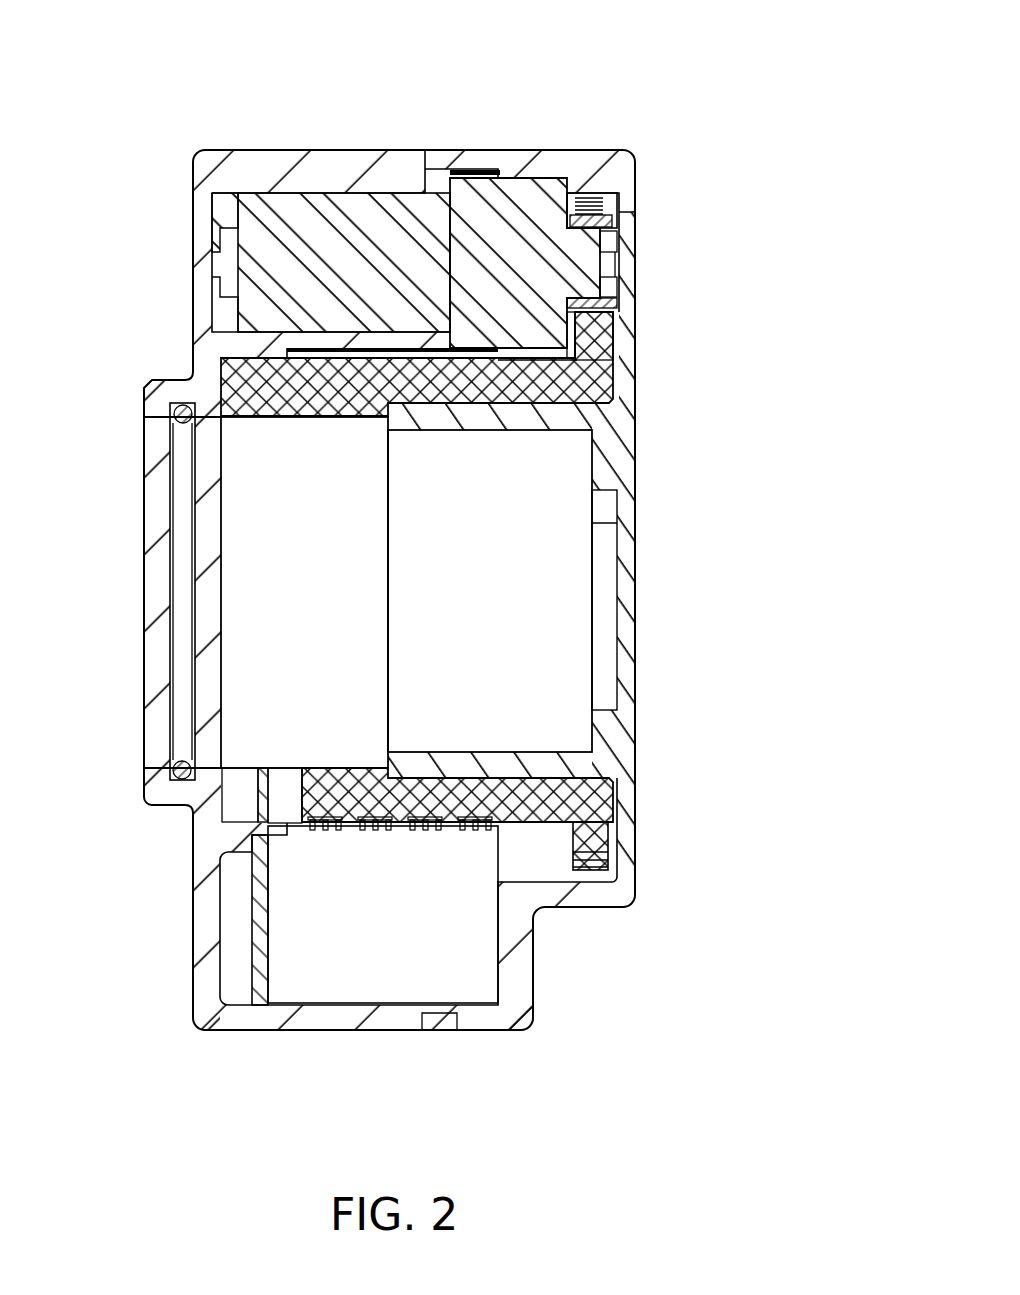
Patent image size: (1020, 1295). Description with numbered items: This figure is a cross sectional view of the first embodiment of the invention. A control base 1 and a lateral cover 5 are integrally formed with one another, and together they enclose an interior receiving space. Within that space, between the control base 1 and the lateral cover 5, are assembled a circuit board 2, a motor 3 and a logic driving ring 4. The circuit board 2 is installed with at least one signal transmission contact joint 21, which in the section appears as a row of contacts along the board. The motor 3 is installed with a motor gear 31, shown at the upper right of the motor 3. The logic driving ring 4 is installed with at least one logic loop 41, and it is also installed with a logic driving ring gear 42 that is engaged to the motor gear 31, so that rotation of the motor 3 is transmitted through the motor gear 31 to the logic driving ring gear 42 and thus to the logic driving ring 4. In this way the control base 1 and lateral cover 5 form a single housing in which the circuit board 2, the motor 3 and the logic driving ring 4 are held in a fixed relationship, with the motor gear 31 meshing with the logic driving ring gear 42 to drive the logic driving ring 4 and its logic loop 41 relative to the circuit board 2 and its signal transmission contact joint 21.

The control base 1 is at (267, 152).
The circuit board 2 is at (253, 945).
The signal transmission contact joint 21 is at (337, 830).
The motor 3 is at (523, 178).
The motor gear 31 is at (612, 210).
The logic driving ring 4 is at (518, 822).
The logic loop 41 is at (327, 815).
The logic driving ring gear 42 is at (608, 348).
The lateral cover 5 is at (633, 468).